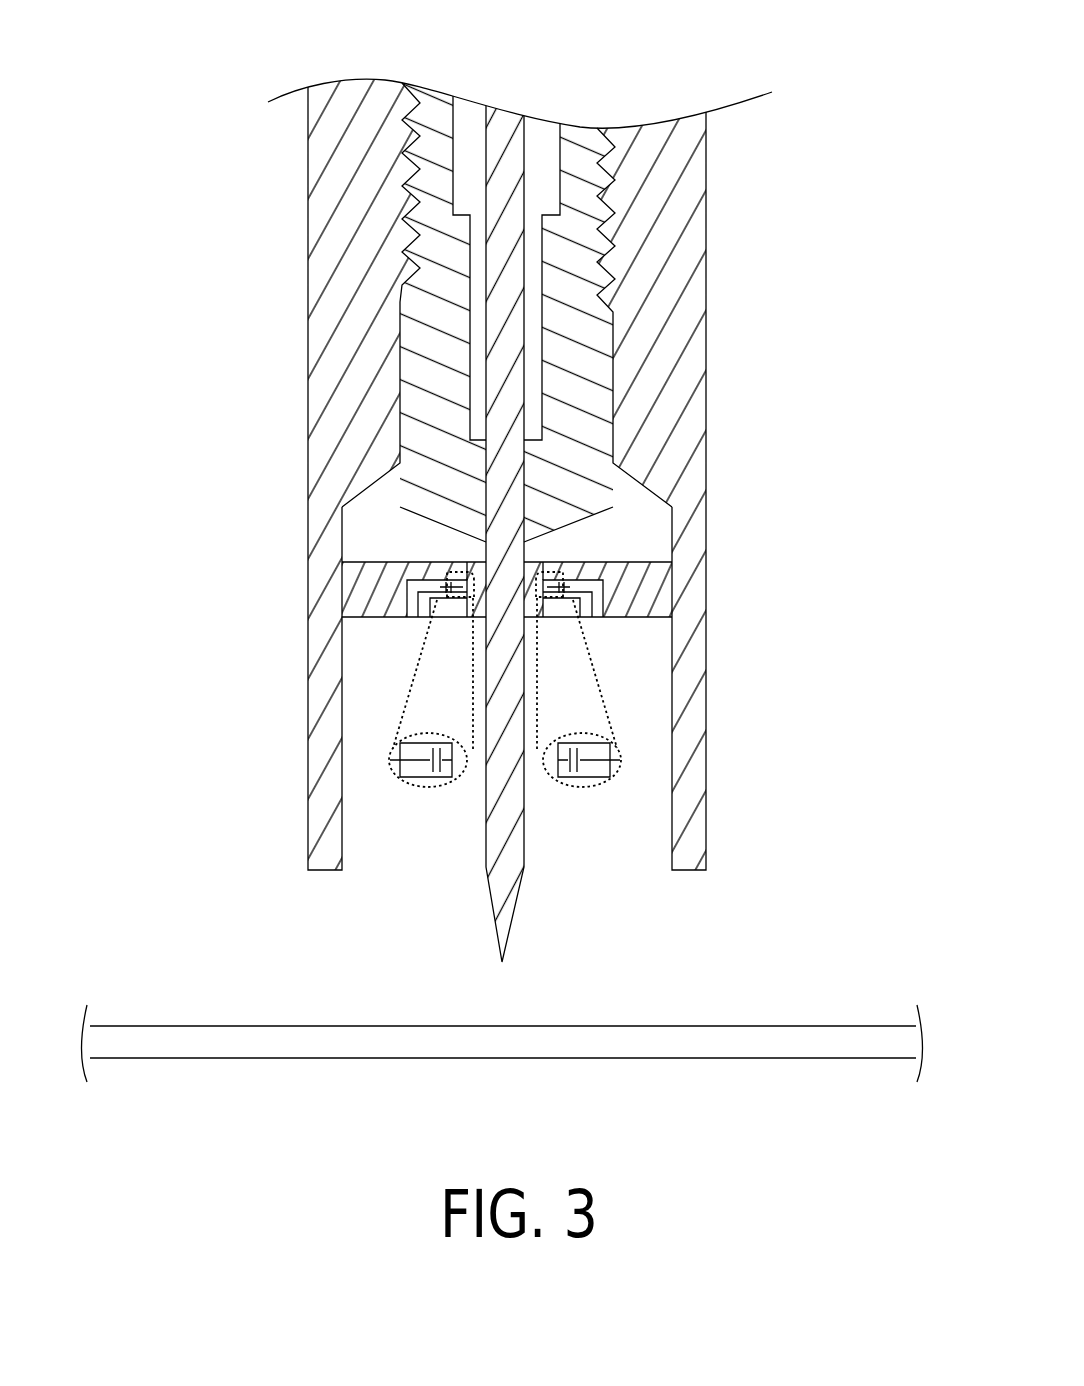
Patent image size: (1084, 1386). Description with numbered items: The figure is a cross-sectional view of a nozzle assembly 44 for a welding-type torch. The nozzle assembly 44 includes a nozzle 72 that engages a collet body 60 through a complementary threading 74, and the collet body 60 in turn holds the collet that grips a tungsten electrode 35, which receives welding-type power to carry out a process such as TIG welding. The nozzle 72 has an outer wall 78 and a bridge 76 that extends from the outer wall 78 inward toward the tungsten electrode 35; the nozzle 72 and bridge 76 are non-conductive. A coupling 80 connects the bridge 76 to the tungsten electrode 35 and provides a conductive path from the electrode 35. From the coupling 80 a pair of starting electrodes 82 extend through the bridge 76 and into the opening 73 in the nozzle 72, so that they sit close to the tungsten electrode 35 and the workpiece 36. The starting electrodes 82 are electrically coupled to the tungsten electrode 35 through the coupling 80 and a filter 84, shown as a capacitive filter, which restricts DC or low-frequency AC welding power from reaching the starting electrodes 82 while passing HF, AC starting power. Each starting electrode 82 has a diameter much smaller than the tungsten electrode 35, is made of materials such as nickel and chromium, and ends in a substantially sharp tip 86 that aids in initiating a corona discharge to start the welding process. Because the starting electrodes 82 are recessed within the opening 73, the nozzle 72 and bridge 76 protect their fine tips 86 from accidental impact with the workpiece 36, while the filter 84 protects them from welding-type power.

The tungsten electrode 35 is at (523, 832).
The workpiece 36 is at (218, 1026).
The nozzle assembly 44 is at (761, 234).
The collet body 60 is at (570, 125).
The nozzle 72 is at (762, 628).
The opening 73 is at (614, 906).
The complementary threading 74 is at (410, 60).
The bridge 76 is at (344, 562).
The outer wall 78 is at (706, 725).
The coupling 80 is at (478, 562).
The starting electrodes 82 is at (412, 620).
The filter 84 is at (424, 778).
The sharp tip 86 is at (434, 639).